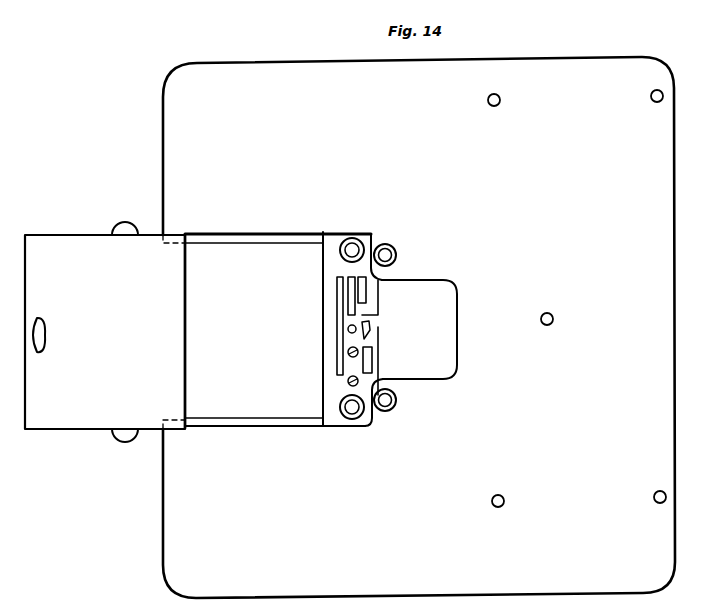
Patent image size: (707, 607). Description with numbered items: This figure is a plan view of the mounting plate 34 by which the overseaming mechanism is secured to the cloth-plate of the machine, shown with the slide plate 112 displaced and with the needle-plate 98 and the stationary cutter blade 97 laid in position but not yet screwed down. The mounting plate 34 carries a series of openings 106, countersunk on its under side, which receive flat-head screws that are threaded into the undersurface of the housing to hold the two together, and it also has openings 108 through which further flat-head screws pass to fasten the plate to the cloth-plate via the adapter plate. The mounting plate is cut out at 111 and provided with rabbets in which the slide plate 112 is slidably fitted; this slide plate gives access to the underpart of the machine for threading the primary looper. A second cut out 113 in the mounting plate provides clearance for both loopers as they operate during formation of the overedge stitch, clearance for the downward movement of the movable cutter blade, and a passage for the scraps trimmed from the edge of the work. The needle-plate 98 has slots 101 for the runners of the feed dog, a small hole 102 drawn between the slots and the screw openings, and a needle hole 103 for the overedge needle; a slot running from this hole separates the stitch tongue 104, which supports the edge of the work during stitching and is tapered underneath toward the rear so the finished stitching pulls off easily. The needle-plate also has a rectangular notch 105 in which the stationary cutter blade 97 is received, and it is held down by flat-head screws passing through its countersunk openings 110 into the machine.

The mounting plate 34 is at (240, 78).
The stationary cutter blade 97 is at (373, 356).
The needle-plate 98 is at (332, 386).
The slots 101 is at (367, 297).
The pilot hole 102 is at (347, 330).
The needle hole 103 is at (368, 332).
The stitch tongue 104 is at (373, 341).
The rectangular notch 105 is at (373, 366).
The openings 106 is at (488, 97).
The openings 108 is at (397, 255).
The countersunk openings 110 is at (346, 420).
The cut out 111 is at (238, 400).
The slide plate 112 is at (63, 412).
The second cut out 113 is at (445, 350).